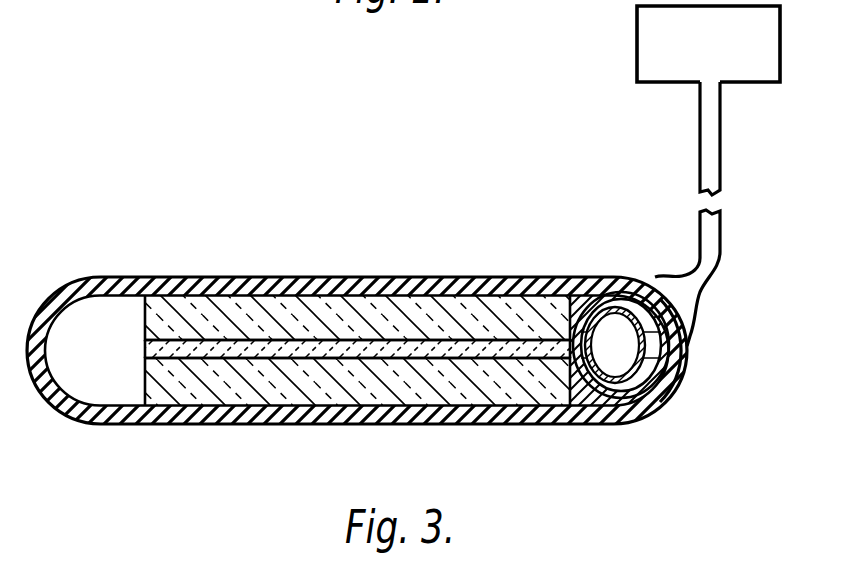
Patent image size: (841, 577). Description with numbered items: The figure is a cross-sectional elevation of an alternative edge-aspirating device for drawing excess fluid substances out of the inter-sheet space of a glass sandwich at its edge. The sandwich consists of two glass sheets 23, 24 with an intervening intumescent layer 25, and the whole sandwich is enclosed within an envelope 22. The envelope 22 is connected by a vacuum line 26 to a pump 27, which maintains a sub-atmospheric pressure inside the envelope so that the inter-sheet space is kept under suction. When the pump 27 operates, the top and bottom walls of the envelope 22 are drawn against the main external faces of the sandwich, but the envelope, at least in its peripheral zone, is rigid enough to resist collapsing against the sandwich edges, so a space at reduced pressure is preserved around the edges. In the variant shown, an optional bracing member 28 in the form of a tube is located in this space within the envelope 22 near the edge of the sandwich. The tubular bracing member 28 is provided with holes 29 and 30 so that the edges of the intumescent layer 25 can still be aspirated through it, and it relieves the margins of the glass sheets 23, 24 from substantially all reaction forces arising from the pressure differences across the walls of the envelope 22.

The envelope 22 is at (93, 284).
The glass sheet 23 is at (205, 317).
The glass sheet 24 is at (223, 383).
The intumescent layer 25 is at (147, 352).
The vacuum line 26 is at (700, 258).
The pump 27 is at (707, 62).
The bracing member 28 is at (607, 345).
The hole 29 is at (622, 368).
The hole 30 is at (662, 345).